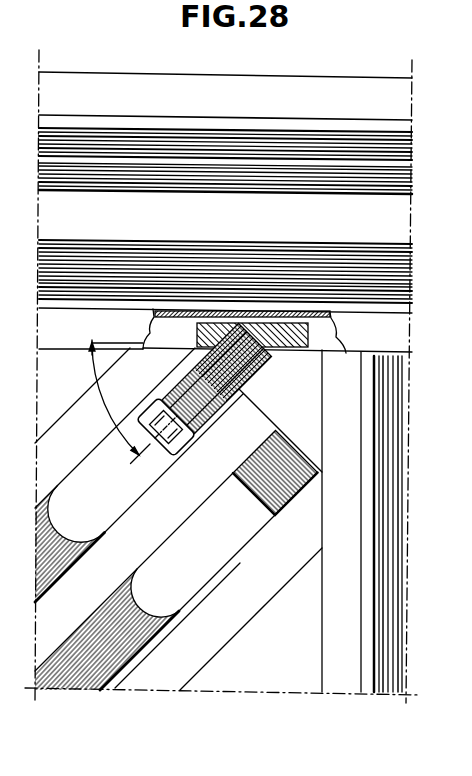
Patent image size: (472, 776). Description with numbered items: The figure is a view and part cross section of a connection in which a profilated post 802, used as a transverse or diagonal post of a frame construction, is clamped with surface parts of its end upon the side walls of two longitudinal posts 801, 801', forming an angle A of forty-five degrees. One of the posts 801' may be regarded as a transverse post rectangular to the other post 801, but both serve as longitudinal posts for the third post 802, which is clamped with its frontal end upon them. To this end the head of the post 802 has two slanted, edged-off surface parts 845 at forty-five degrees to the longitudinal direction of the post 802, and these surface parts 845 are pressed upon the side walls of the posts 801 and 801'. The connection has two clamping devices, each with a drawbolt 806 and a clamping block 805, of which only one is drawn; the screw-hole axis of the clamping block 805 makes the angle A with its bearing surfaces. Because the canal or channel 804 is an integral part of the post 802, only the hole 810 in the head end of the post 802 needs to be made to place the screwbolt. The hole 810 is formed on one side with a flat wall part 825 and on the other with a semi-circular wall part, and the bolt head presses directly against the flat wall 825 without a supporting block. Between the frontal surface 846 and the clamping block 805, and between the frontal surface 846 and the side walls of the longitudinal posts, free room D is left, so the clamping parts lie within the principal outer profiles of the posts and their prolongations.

The post 801 is at (249, 187).
The clamping block 805 is at (300, 336).
The slanted surface part 845 is at (160, 358).
The drawbolt 806 is at (210, 365).
The canal 804 is at (235, 407).
The frontal surface 846 is at (270, 420).
The flat wall part 825 is at (255, 493).
The post 801' is at (413, 524).
The hole 810 is at (242, 530).
The post 802 is at (163, 527).
The angle A is at (116, 397).
The free room D is at (252, 387).